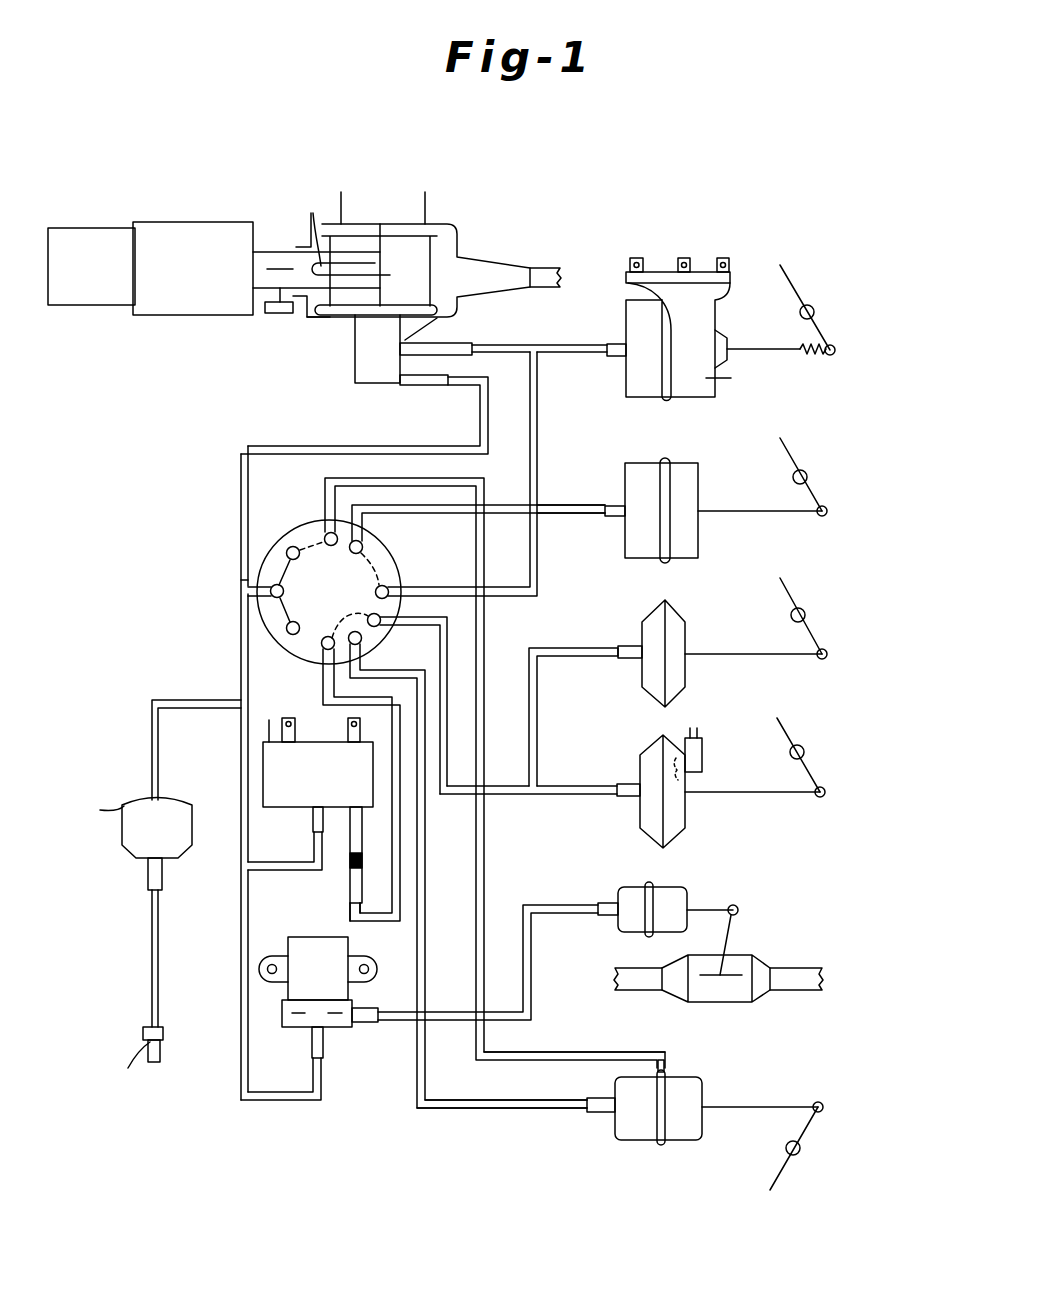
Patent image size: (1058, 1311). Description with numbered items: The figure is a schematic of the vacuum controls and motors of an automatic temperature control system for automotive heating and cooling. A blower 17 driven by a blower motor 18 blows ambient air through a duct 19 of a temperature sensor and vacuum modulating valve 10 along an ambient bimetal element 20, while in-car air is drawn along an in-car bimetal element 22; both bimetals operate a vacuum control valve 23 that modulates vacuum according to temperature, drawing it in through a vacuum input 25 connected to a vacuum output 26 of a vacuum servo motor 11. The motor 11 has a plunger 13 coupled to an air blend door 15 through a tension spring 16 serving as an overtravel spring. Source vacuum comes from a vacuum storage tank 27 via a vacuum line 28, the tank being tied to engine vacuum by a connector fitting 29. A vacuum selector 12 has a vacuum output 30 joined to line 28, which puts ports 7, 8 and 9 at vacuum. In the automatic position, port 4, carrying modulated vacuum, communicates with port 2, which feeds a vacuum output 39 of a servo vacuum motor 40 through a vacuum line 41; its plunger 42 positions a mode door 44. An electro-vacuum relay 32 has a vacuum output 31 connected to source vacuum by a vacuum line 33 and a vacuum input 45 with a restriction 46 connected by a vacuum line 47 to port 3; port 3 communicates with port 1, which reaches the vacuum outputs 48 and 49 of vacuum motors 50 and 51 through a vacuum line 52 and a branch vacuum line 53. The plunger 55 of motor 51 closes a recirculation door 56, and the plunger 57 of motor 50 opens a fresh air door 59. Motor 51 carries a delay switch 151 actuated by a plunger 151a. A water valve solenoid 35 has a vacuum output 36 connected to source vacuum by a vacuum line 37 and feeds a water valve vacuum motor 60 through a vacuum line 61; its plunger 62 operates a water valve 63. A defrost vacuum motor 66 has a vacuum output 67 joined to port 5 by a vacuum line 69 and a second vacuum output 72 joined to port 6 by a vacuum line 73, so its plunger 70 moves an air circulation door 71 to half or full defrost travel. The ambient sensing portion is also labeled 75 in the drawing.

The port 1 is at (383, 608).
The port 2 is at (358, 554).
The port 3 is at (322, 644).
The port 4 is at (375, 591).
The port 5 is at (362, 642).
The port 6 is at (331, 546).
The port 7 is at (289, 634).
The port 8 is at (283, 596).
The port 9 is at (289, 547).
The temperature sensor and vacuum modulating valve 10 is at (458, 231).
The vacuum servo motor 11 is at (685, 398).
The vacuum selector 12 is at (305, 518).
The plunger 13 is at (750, 349).
The air blend door 15 is at (792, 284).
The tension spring 16 is at (805, 344).
The blower 17 is at (175, 231).
The blower motor 18 is at (78, 233).
The ambient air duct 19 is at (270, 248).
The ambient bimetal element 20 is at (309, 226).
The in-car bimetal element 22 is at (396, 237).
The vacuum control valve 23 is at (368, 344).
The vacuum input 25 is at (452, 343).
The vacuum output 26 is at (429, 385).
The vacuum storage tank 27 is at (174, 797).
The vacuum line 28 is at (162, 745).
The connector fitting 29 is at (166, 1032).
The vacuum output 30 is at (241, 580).
The vacuum output 31 is at (314, 823).
The electro-vacuum relay 32 is at (314, 753).
The vacuum line 33 is at (284, 872).
The water valve solenoid 35 is at (290, 942).
The vacuum output 36 is at (312, 1036).
The vacuum line 37 is at (281, 1078).
The vacuum output 39 is at (611, 518).
The servo vacuum motor 40 is at (696, 466).
The vacuum line 41 is at (562, 506).
The plunger 42 is at (750, 510).
The mode door 44 is at (794, 454).
The vacuum input 45 is at (362, 848).
The restriction 46 is at (352, 855).
The vacuum line 47 is at (373, 918).
The vacuum output 48 is at (625, 646).
The vacuum output 49 is at (622, 784).
The vacuum motor 50 is at (680, 611).
The vacuum motor 51 is at (685, 830).
The vacuum line 52 is at (570, 794).
The branch vacuum line 53 is at (537, 736).
The plunger 55 is at (766, 792).
The recirculation door 56 is at (797, 729).
The plunger 57 is at (725, 654).
The fresh air door 59 is at (797, 593).
The water valve vacuum motor 60 is at (628, 887).
The vacuum line 61 is at (545, 905).
The plunger 62 is at (702, 910).
The water valve 63 is at (735, 973).
The defrost vacuum motor 66 is at (684, 1143).
The vacuum output 67 is at (600, 1115).
The vacuum line 69 is at (480, 1108).
The plunger 70 is at (766, 1106).
The air circulation door 71 is at (806, 1130).
The second vacuum output 72 is at (667, 1067).
The vacuum line 73 is at (594, 1054).
The ambient temperature sensor 75 is at (294, 293).
The delay switch 151 is at (702, 746).
The plunger 151a is at (683, 781).